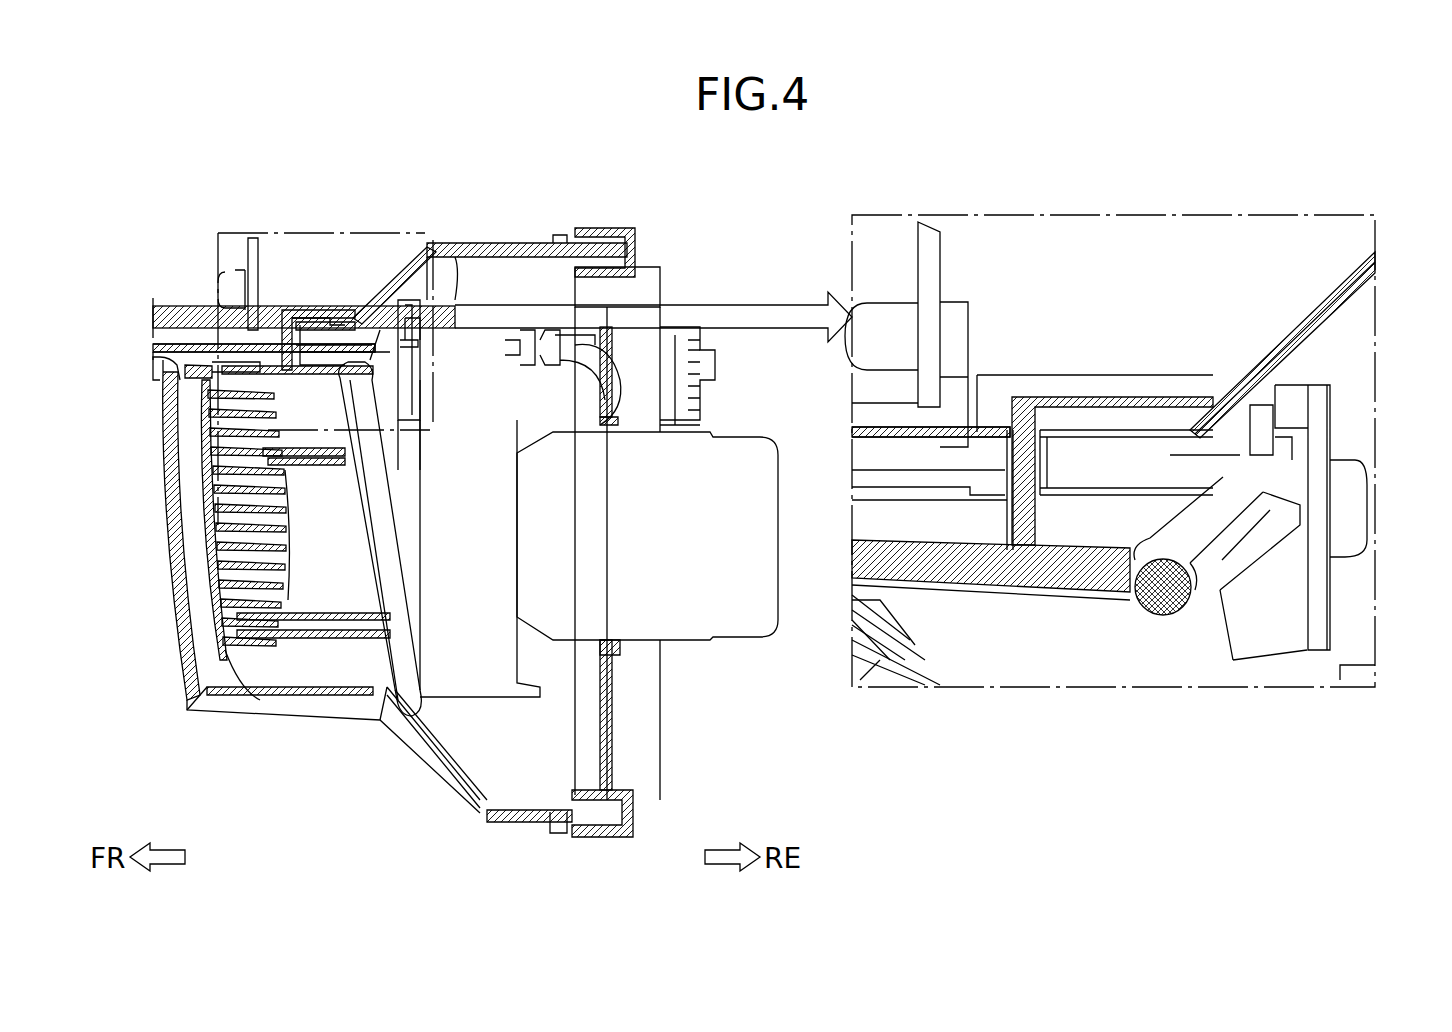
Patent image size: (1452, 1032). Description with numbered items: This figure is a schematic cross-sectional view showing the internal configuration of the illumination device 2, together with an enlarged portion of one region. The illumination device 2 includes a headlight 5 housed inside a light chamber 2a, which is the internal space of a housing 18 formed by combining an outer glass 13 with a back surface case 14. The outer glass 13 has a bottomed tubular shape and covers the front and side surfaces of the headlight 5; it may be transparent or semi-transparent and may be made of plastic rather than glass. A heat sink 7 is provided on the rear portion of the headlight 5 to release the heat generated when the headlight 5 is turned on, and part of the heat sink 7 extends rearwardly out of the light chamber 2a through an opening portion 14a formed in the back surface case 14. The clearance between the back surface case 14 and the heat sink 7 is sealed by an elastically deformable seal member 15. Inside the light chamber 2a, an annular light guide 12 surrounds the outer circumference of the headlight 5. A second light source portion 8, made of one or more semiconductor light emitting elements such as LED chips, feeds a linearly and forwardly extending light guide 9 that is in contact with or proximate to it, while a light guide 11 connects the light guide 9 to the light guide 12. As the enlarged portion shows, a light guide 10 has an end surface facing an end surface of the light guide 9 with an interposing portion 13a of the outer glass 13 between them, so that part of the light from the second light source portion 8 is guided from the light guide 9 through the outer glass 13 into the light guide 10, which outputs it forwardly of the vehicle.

The illumination device 2 is at (293, 735).
The light chamber 2a is at (215, 582).
The headlight 5 is at (340, 595).
The heat sink 7 is at (688, 608).
The second light source portion 8 is at (403, 330).
The light guide 9 is at (350, 337).
The light guide 10 is at (190, 325).
The light guide 11 is at (330, 350).
The light guide 12 is at (413, 688).
The outer glass 13 is at (177, 377).
The interposing portion 13a is at (1027, 470).
The back surface case 14 is at (610, 235).
The opening portion 14a is at (560, 358).
The seal member 15 is at (620, 390).
The housing 18 is at (504, 233).